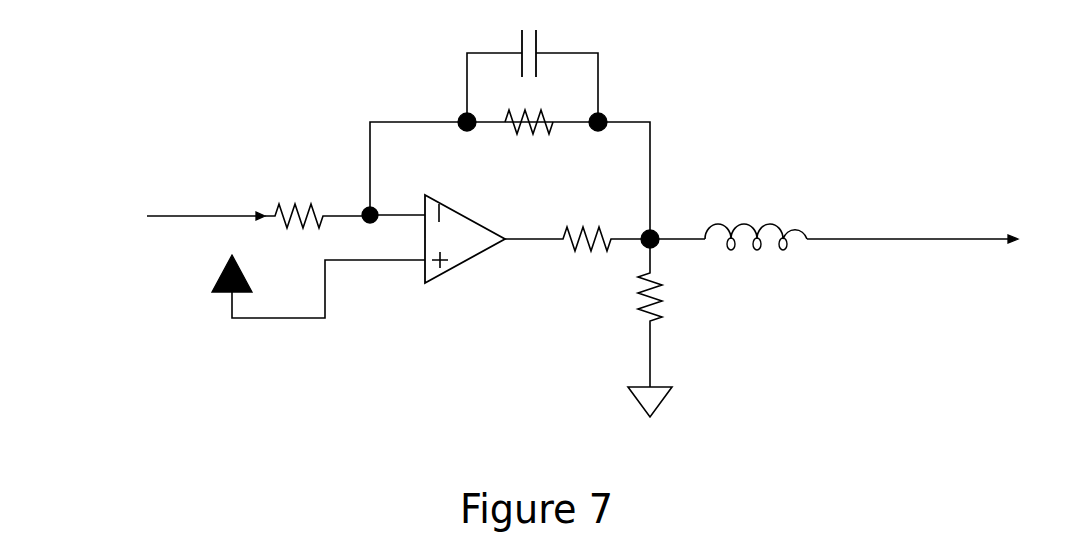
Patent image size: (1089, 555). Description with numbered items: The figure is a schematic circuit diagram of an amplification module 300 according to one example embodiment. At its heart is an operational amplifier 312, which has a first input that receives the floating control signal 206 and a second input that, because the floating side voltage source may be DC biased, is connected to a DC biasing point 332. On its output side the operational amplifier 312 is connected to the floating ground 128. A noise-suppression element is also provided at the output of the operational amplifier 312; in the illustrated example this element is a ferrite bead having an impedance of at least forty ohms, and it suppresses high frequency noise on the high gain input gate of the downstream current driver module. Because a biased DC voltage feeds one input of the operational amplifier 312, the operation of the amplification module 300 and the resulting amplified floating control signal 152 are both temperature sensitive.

The amplification module 300 is at (298, 68).
The floating control signal 206 is at (253, 213).
The operational amplifier 312 is at (468, 263).
The DC biasing point 332 is at (298, 320).
The floating ground 128 is at (672, 387).
The amplified floating control signal 152 is at (985, 238).